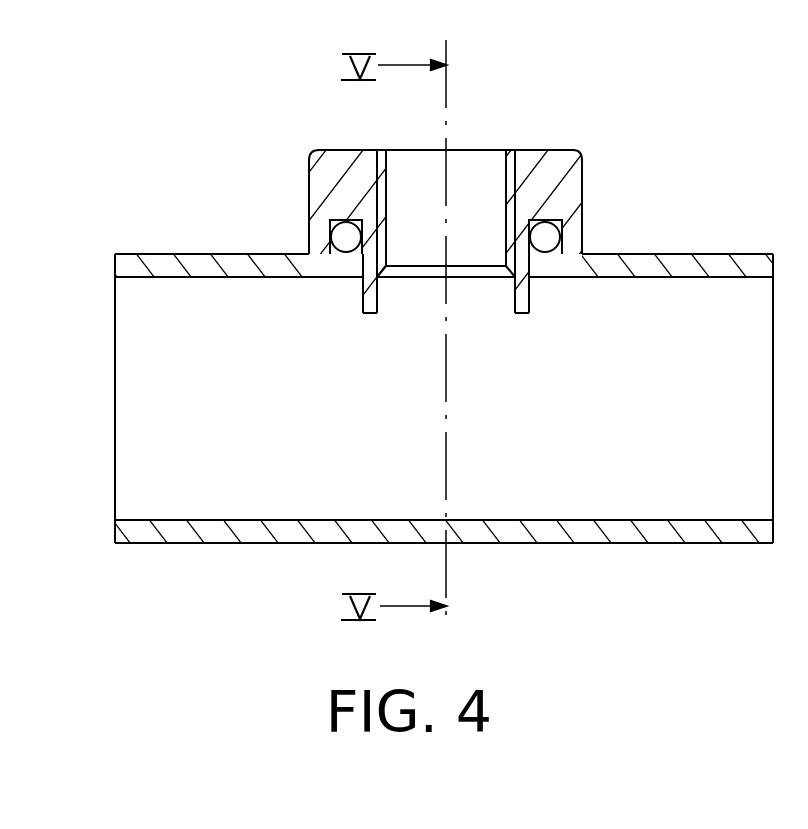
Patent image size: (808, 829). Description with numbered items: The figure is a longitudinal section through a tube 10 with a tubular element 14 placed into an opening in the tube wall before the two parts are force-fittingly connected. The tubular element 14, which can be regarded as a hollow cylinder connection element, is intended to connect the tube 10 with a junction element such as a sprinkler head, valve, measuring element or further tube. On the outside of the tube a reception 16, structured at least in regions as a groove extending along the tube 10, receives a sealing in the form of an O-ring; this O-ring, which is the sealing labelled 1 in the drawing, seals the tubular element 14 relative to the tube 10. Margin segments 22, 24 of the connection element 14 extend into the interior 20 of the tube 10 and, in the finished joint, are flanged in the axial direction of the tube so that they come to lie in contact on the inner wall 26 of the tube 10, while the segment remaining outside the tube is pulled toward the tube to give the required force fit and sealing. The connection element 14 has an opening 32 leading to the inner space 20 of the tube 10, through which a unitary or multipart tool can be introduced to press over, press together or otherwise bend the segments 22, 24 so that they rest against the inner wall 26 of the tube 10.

The O-ring seal 1 is at (344, 237).
The tube 10 is at (722, 253).
The tubular element 14 is at (581, 158).
The reception 16 is at (564, 220).
The interior 20 is at (686, 458).
The margin segment 22 is at (362, 303).
The margin segment 24 is at (521, 292).
The inner wall 26 is at (680, 277).
The opening 32 is at (482, 158).